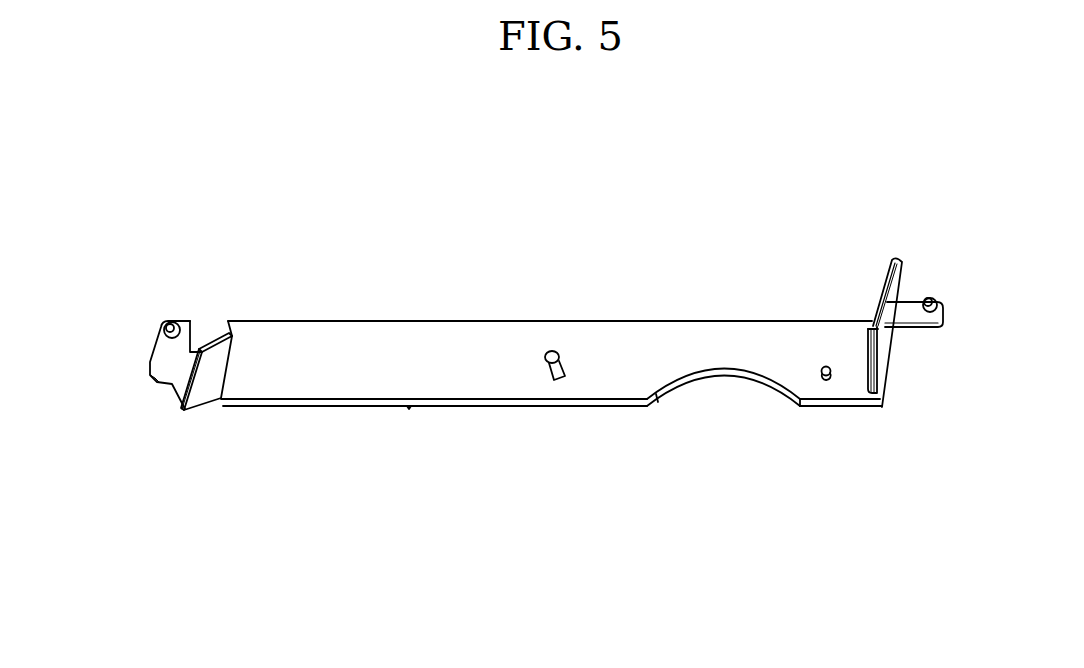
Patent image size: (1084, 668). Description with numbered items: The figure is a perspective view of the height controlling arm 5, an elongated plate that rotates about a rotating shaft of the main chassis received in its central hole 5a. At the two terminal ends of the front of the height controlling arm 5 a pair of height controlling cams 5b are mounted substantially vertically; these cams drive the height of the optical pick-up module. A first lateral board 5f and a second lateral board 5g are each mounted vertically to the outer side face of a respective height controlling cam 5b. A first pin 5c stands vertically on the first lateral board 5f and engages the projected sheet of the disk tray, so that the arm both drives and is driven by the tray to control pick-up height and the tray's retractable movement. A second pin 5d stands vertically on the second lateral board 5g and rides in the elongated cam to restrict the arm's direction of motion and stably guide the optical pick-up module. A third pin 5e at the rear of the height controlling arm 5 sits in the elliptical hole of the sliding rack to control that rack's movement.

The height controlling arm 5 is at (530, 603).
The central hole 5a is at (559, 383).
The height controlling cam 5b is at (197, 400).
The first pin 5c is at (173, 322).
The second pin 5d is at (930, 297).
The third pin 5e is at (833, 383).
The first lateral board 5f is at (166, 361).
The second lateral board 5g is at (903, 318).